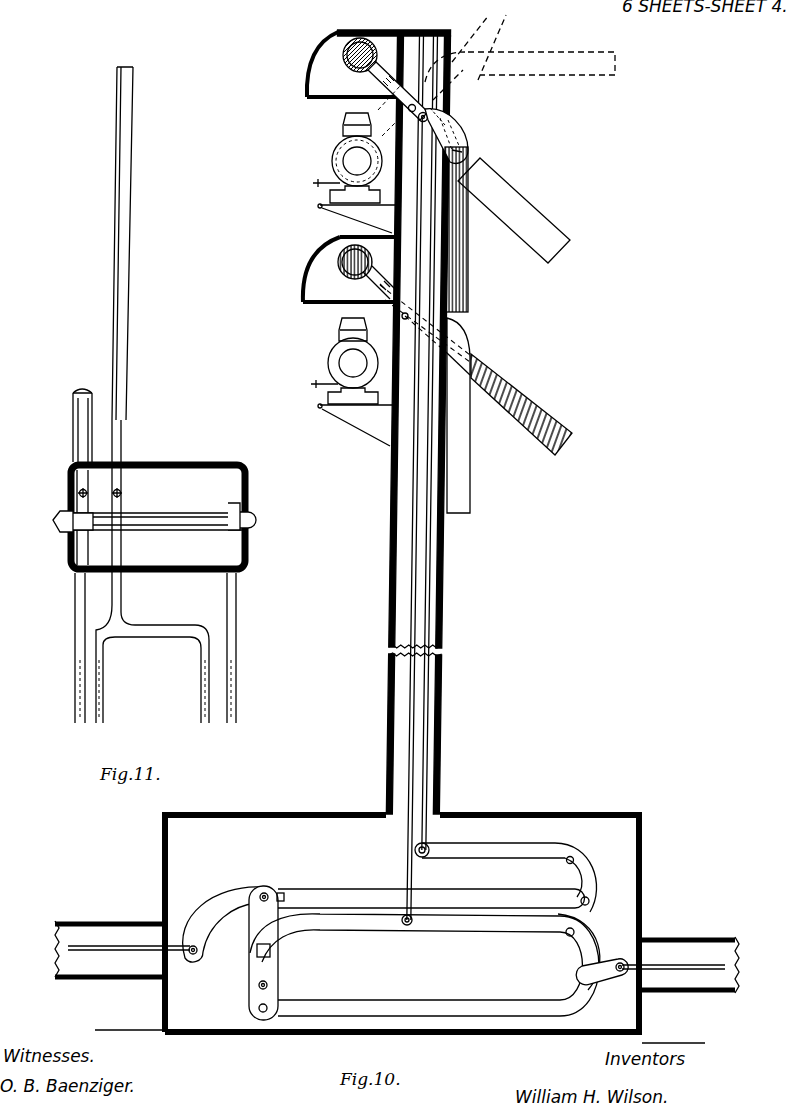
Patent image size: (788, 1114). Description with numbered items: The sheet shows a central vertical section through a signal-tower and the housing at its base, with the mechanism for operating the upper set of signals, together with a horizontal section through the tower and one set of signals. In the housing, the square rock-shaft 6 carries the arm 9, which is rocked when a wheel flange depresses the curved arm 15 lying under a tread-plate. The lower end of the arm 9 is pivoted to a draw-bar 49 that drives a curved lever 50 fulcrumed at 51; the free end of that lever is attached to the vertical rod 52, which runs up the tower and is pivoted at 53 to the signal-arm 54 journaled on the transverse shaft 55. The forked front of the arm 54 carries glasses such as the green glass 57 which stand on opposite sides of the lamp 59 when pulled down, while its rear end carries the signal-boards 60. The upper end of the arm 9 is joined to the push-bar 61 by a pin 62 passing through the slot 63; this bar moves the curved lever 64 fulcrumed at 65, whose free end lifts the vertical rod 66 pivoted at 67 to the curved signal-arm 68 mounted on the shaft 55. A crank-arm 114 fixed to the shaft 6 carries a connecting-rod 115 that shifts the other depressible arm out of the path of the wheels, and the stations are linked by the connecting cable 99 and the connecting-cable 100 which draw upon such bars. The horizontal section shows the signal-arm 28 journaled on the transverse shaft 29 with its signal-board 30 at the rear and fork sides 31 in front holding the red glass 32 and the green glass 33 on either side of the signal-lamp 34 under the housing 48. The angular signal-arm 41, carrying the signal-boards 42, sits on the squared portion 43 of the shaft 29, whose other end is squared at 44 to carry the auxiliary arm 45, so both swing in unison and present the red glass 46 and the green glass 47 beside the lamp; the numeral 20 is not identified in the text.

In FIG. 10, the square rock-shaft 6 is at (271, 951).
In FIG. 10, the arm 9 is at (252, 930).
In FIG. 10, the curved arm 15 is at (303, 922).
In FIG. 10, the standard column 20 is at (441, 556).
In FIG. 10, the signal-arm 28 is at (466, 357).
In FIG. 11, the signal-arm 28 is at (122, 450).
In FIG. 10, the transverse shaft 29 is at (401, 316).
In FIG. 11, the transverse shaft 29 is at (165, 522).
In FIG. 10, the signal-board 30 is at (545, 397).
In FIG. 11, the signal-board 30 is at (118, 67).
In FIG. 11, the fork sides 31 is at (183, 654).
In FIG. 10, the red glass 32 is at (350, 272).
In FIG. 11, the red glass 32 is at (201, 694).
In FIG. 11, the green glass 33 is at (103, 690).
In FIG. 10, the signal-lamp 34 is at (340, 365).
In FIG. 11, the angular signal-arm 41 is at (78, 452).
In FIG. 10, the signal-boards 42 is at (471, 492).
In FIG. 11, the signal-boards 42 is at (81, 377).
In FIG. 11, the squared portion 43 is at (80, 530).
In FIG. 11, the squared portion 44 is at (232, 516).
In FIG. 11, the auxiliary arm 45 is at (238, 607).
In FIG. 11, the red glass 46 is at (60, 648).
In FIG. 11, the green glass 47 is at (236, 700).
In FIG. 10, the housing 48 is at (310, 272).
In FIG. 10, the draw-bar 49 is at (408, 1000).
In FIG. 10, the curved lever 50 is at (572, 955).
In FIG. 10, the fulcrum 51 is at (576, 932).
In FIG. 10, the vertical rod 52 is at (414, 845).
In FIG. 10, the pivot 53 is at (428, 116).
In FIG. 10, the signal-arm 54 is at (458, 150).
In FIG. 10, the transverse shaft 55 is at (415, 106).
In FIG. 10, the green glass 57 is at (352, 64).
In FIG. 10, the lamp 59 is at (343, 160).
In FIG. 10, the signal-boards 60 is at (552, 235).
In FIG. 10, the push-bar 61 is at (337, 892).
In FIG. 10, the pin 62 is at (263, 893).
In FIG. 10, the slot 63 is at (283, 892).
In FIG. 10, the curved lever 64 is at (594, 880).
In FIG. 10, the fulcrum 65 is at (574, 857).
In FIG. 10, the vertical rod 66 is at (432, 735).
In FIG. 10, the pivot 67 is at (436, 120).
In FIG. 10, the curved signal-arm 68 is at (467, 136).
In FIG. 10, the connecting rod or cable 99 is at (122, 949).
In FIG. 10, the connecting-cable 100 is at (657, 965).
In FIG. 10, the crank-arm 114 is at (255, 981).
In FIG. 10, the connecting-rod 115 is at (267, 985).